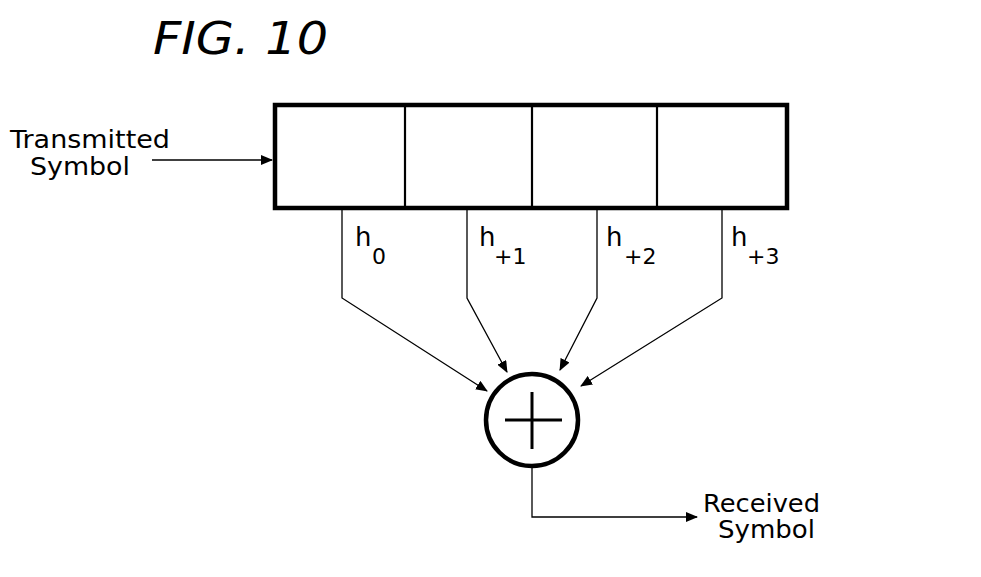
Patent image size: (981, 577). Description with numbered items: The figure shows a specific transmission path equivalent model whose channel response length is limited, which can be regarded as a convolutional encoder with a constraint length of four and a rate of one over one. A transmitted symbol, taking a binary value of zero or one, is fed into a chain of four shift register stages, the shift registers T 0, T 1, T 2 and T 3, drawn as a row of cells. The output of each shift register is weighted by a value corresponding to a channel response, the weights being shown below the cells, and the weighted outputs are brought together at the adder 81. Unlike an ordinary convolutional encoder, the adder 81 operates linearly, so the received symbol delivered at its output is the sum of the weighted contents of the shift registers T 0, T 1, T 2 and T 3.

The adder 81 is at (582, 417).
The shift register stage T0 0 is at (340, 156).
The shift register stage T1 1 is at (439, 156).
The shift register stage T2 2 is at (565, 156).
The shift register stage T3 3 is at (689, 156).